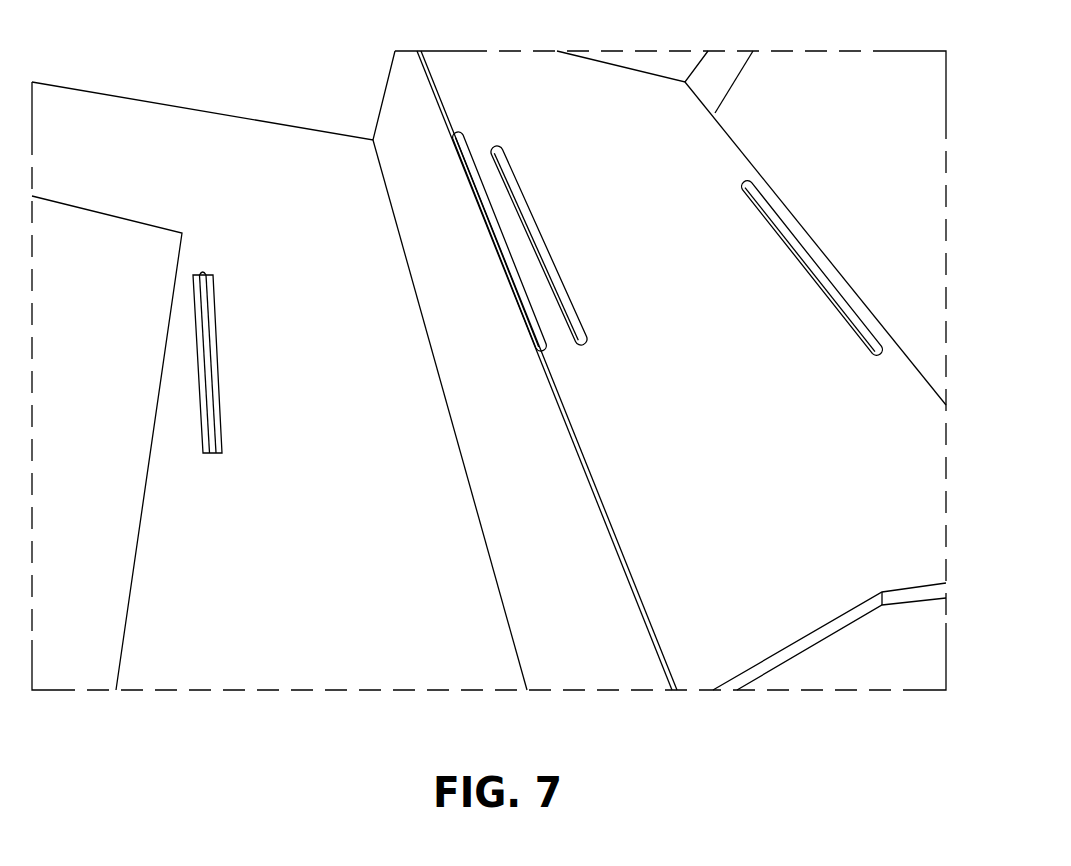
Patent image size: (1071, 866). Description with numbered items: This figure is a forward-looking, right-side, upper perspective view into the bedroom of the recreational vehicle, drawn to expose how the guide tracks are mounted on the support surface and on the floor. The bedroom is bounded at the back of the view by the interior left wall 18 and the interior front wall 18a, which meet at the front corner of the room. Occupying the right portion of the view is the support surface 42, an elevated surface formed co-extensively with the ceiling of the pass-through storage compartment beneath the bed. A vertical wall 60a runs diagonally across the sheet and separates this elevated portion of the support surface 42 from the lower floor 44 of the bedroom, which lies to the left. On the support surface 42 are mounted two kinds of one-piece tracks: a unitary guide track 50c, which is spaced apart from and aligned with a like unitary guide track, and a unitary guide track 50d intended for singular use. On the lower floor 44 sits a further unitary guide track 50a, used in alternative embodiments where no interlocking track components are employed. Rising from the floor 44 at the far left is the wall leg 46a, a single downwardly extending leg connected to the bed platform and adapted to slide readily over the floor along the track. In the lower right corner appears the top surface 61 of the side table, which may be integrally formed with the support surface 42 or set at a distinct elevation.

The interior left wall 18 is at (670, 62).
The interior front wall 18a is at (783, 150).
The support surface 42 is at (683, 269).
The floor of the bedroom 44 is at (313, 243).
The wall leg 46a is at (117, 412).
The unitary guide track 50a is at (220, 392).
The unitary guide track 50c is at (571, 305).
The unitary guide track 50d is at (835, 312).
The vertical wall 60a is at (607, 640).
The top surface of side table 61 is at (826, 585).